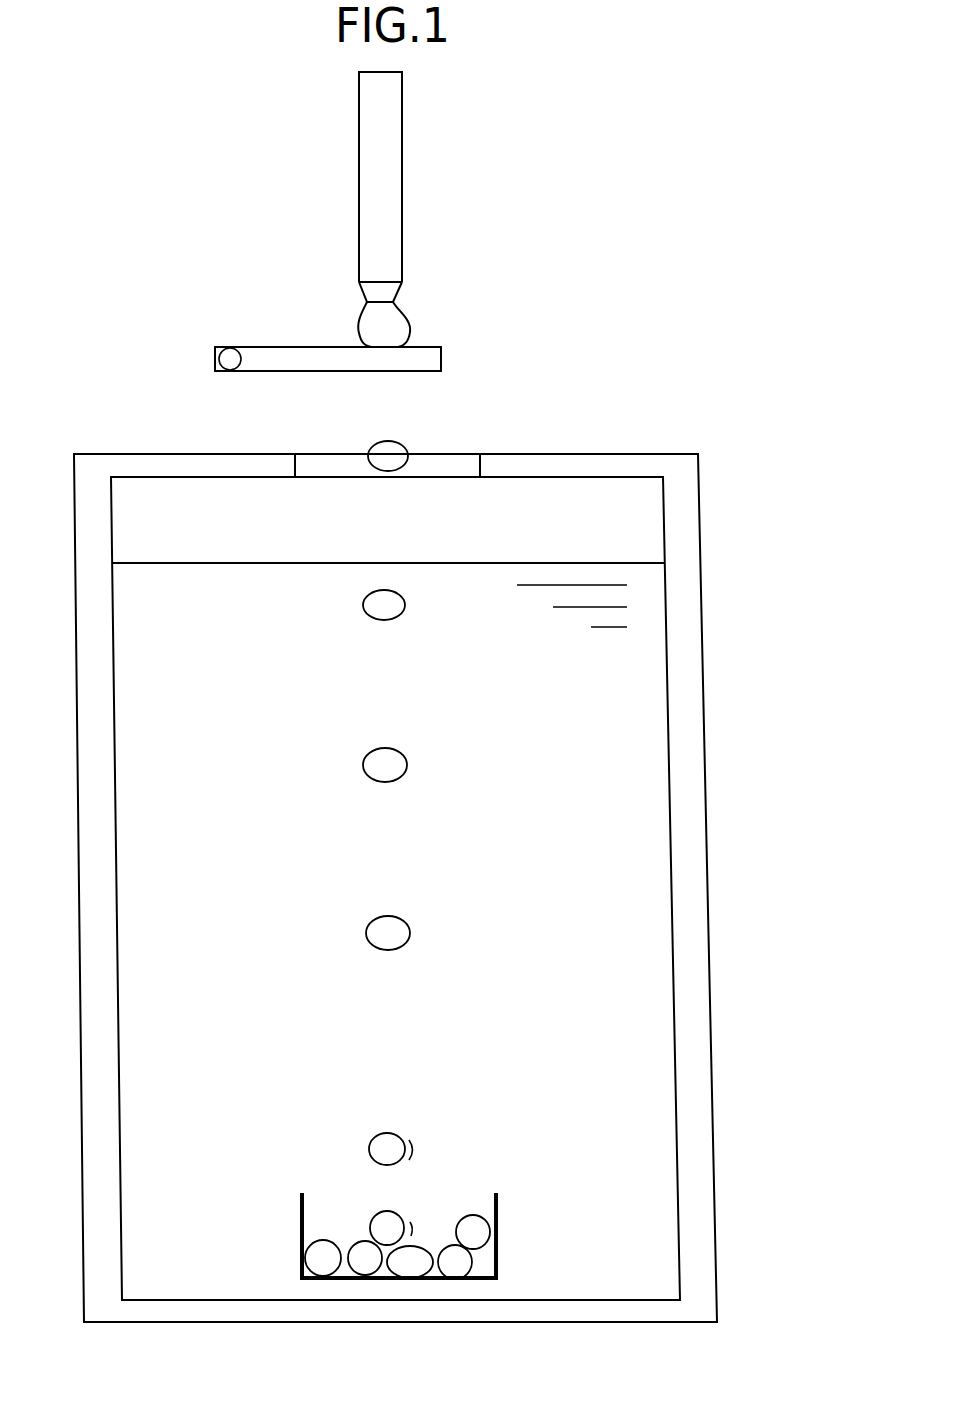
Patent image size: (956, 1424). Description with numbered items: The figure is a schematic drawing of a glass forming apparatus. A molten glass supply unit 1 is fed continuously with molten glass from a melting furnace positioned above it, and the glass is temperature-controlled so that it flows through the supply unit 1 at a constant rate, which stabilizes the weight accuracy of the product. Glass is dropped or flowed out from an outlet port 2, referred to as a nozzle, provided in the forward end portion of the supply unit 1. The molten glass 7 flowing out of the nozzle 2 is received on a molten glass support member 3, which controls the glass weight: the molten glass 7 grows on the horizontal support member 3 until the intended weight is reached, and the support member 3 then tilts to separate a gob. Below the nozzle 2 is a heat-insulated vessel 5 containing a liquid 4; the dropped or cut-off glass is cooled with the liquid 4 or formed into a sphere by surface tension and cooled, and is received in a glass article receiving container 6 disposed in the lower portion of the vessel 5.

The molten glass supply unit 1 is at (380, 180).
The outlet port (nozzle) 2 is at (387, 292).
The molten glass support member 3 is at (425, 358).
The liquid 4 is at (613, 718).
The heat-insulated vessel 5 is at (678, 861).
The glass article receiving container 6 is at (503, 1216).
The molten glass 7 is at (367, 330).